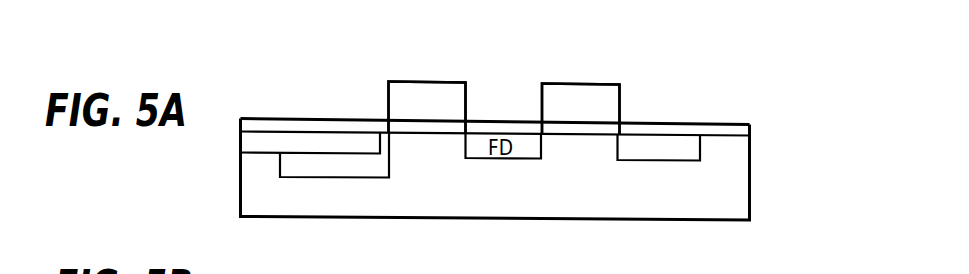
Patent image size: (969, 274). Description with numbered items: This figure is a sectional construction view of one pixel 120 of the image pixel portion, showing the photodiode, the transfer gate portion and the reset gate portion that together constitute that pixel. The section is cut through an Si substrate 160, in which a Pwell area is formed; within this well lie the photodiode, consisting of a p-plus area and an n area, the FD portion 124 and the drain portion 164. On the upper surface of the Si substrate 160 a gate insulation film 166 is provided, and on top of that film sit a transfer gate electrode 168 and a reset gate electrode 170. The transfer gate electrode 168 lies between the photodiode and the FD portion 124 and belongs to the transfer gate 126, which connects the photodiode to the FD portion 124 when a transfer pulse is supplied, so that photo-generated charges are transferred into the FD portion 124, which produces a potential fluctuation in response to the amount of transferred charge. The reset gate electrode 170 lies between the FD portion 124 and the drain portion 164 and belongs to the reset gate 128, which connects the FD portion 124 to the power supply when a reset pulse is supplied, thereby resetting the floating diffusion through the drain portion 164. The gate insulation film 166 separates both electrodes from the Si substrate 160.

The pixel 120 is at (272, 42).
The FD portion 124 is at (520, 150).
The transfer gate 126 is at (417, 72).
The reset gate 128 is at (568, 72).
The Si substrate 160 is at (723, 195).
The drain portion 164 is at (703, 143).
The gate insulation film 166 is at (710, 131).
The transfer gate electrode 168 is at (450, 81).
The reset gate electrode 170 is at (600, 82).